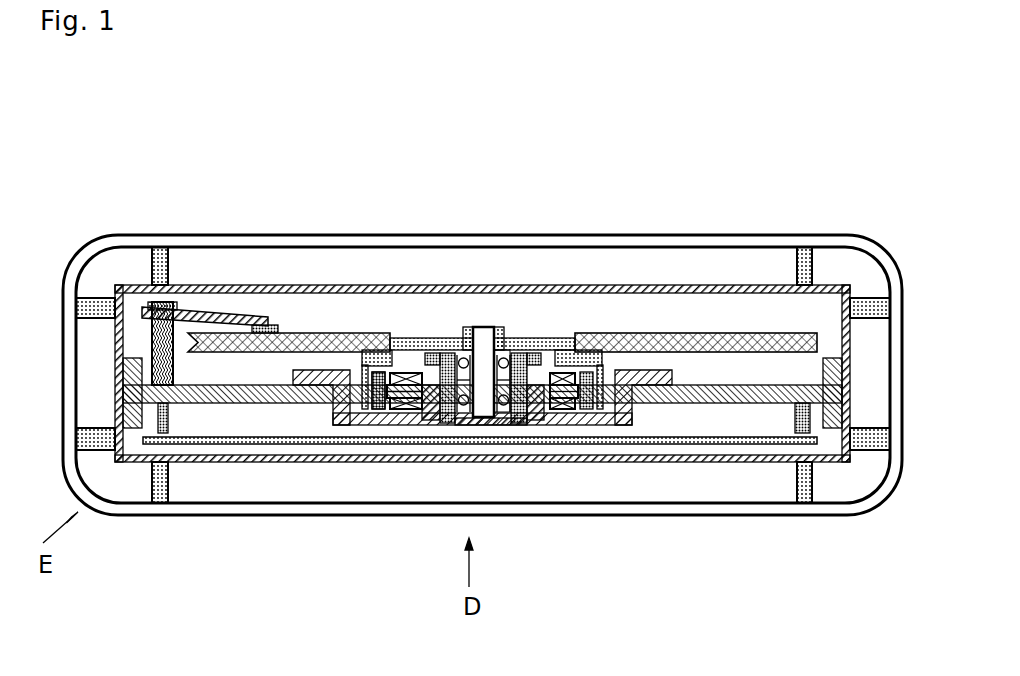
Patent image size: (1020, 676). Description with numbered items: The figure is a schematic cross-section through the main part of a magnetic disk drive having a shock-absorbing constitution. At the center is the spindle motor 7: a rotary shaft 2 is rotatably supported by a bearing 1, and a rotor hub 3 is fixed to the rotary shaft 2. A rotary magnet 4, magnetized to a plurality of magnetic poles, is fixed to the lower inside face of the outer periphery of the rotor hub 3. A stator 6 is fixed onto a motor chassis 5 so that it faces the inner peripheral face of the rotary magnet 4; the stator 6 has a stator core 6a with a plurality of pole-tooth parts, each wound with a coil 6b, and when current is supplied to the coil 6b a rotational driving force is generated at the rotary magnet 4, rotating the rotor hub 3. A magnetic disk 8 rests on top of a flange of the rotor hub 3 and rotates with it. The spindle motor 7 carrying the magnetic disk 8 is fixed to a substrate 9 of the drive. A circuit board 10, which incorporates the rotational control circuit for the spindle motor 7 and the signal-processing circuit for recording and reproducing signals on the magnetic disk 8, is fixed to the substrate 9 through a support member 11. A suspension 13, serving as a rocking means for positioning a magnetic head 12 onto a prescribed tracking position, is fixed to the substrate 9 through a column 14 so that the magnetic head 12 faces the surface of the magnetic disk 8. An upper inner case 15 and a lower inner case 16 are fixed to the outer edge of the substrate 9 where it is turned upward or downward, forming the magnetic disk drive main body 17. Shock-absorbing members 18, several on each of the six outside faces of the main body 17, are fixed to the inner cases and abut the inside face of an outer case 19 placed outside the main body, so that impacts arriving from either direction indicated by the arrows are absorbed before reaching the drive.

The bearing 1 is at (503, 358).
The rotary shaft 2 is at (481, 350).
The rotor hub 3 is at (540, 360).
The rotary magnet 4 is at (588, 383).
The motor chassis 5 is at (358, 400).
The stator 6 is at (448, 198).
The stator core 6a is at (407, 382).
The coil 6b is at (396, 382).
The spindle motor 7 is at (672, 157).
The magnetic disk 8 is at (327, 333).
The substrate 9 is at (273, 403).
The circuit board 10 is at (640, 443).
The support member 11 is at (803, 413).
The magnetic head 12 is at (270, 323).
The suspension 13 is at (212, 305).
The column 14 is at (160, 363).
The upper inner case 15 is at (722, 287).
The lower inner case 16 is at (570, 460).
The magnetic disk drive main body 17 is at (675, 275).
The shock-absorbing member 18 is at (150, 262).
The outer case 19 is at (360, 512).